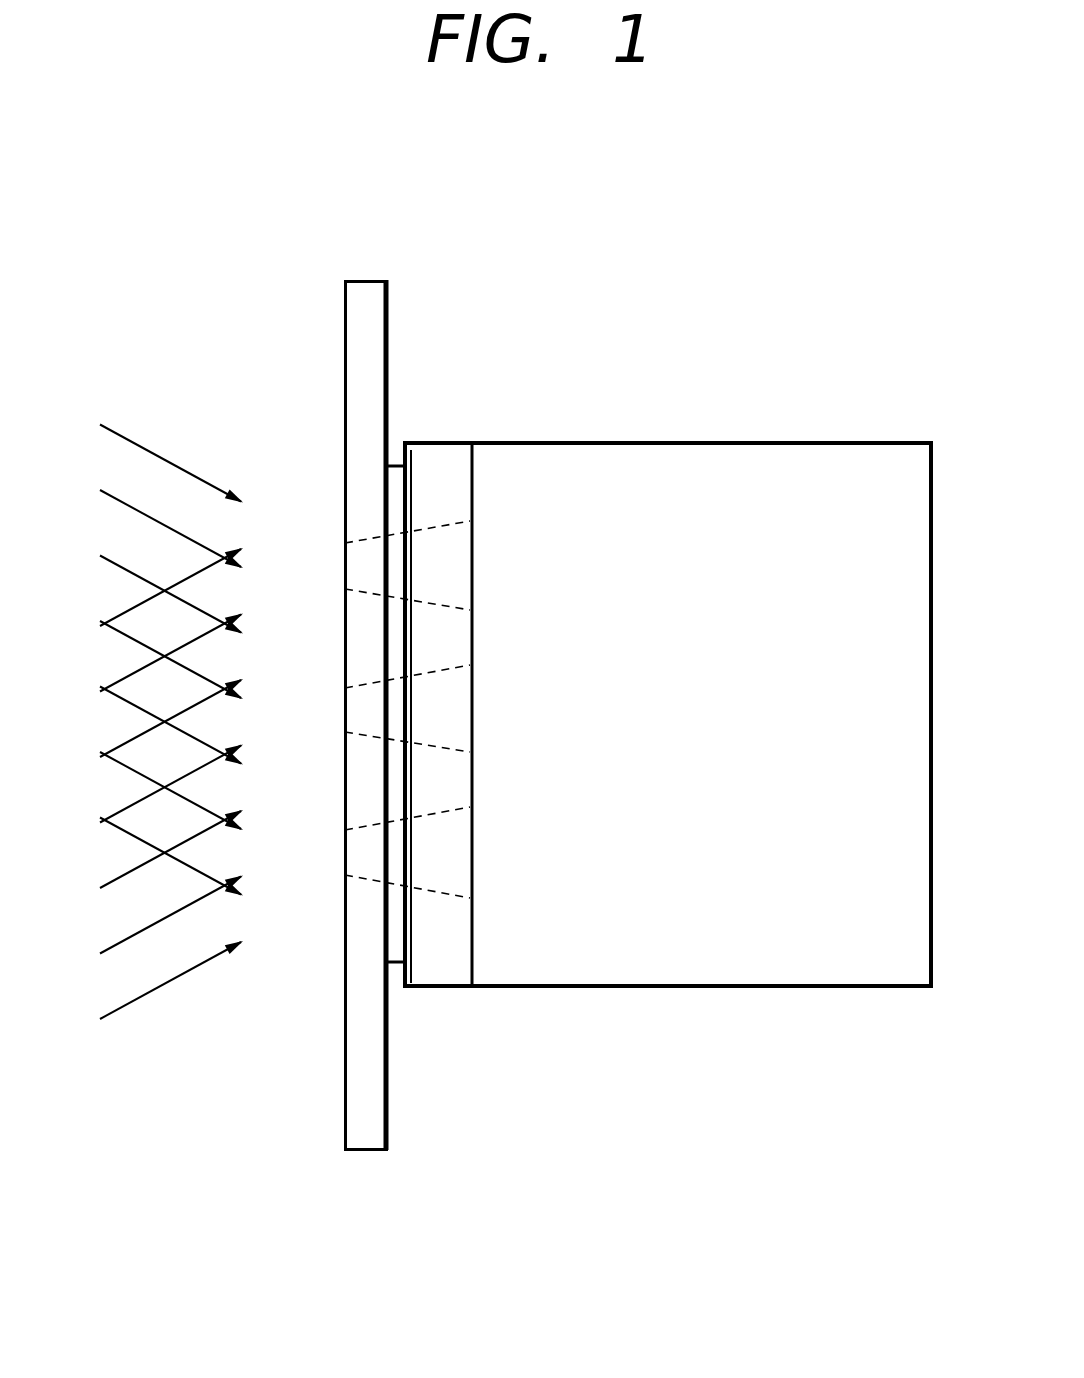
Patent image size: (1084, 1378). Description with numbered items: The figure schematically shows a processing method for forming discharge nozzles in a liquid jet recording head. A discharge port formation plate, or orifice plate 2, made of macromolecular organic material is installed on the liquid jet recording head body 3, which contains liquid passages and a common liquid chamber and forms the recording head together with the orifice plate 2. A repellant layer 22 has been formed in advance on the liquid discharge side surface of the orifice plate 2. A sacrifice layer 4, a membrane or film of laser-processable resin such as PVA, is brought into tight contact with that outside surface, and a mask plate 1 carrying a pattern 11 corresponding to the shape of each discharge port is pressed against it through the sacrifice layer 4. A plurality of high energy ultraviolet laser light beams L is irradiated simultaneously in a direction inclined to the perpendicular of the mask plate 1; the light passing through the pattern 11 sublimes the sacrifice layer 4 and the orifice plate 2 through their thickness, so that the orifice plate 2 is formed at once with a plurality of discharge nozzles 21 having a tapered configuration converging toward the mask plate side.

The mask plate 1 is at (365, 1133).
The pattern 11 is at (358, 852).
The discharge port formation plate 2 is at (446, 965).
The discharge nozzles 21 is at (458, 565).
The repellant layer 22 is at (396, 508).
The liquid jet recording head body 3 is at (641, 965).
The sacrifice layer 4 is at (408, 497).
The ultraviolet laser light beams L is at (168, 462).